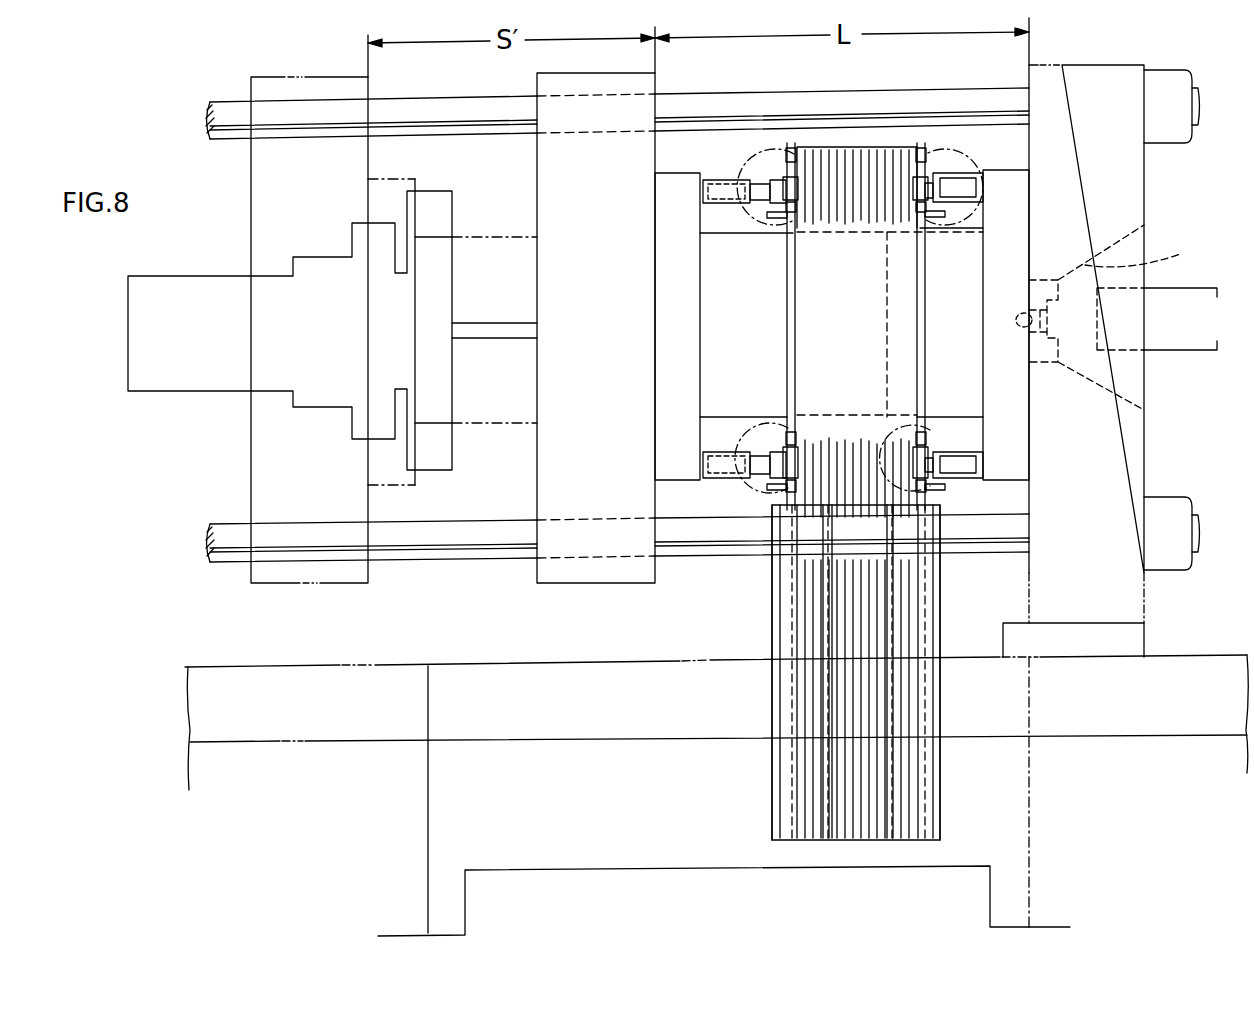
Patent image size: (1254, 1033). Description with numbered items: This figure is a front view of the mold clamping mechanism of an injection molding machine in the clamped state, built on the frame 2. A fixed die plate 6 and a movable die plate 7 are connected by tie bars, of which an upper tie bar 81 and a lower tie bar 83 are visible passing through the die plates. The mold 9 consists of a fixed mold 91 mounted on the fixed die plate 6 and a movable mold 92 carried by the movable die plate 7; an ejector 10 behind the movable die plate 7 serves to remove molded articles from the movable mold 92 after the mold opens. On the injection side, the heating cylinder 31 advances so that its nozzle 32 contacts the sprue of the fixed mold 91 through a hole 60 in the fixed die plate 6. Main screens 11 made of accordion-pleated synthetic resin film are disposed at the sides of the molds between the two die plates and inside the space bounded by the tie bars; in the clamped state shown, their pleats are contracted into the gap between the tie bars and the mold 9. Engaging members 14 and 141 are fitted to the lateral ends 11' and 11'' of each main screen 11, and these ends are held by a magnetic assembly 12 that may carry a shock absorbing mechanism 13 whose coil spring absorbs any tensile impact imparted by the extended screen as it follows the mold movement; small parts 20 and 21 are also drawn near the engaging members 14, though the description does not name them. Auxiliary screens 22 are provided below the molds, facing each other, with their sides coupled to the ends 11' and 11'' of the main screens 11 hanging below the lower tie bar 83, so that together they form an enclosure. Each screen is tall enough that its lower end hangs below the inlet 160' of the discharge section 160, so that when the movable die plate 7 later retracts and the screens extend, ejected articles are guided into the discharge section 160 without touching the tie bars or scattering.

The frame 2 is at (1182, 688).
The fixed die plate 6 is at (1073, 80).
The movable die plate 7 is at (311, 90).
The tie bar 81 is at (218, 104).
The tie bar 83 is at (228, 528).
The mold 9 is at (898, 192).
The fixed mold 91 is at (900, 252).
The movable mold 92 is at (868, 252).
The ejector 10 is at (514, 340).
The main screen 11 is at (861, 141).
The lateral end of screen 11' is at (881, 639).
The lateral end of screen 11'' is at (824, 585).
The magnetic assembly 12 is at (975, 188).
The shock absorbing mechanism 13 is at (717, 192).
The engaging member 14 is at (795, 243).
The engaging member 141 is at (848, 84).
The nut 20 is at (770, 202).
The fitting 21 is at (787, 216).
The auxiliary screen 22 is at (928, 647).
The heating cylinder 31 is at (1183, 294).
The nozzle 32 is at (1024, 312).
The hole of fixed die plate 60 is at (1142, 251).
The discharge section 160 is at (710, 901).
The inlet of discharge section 160' is at (691, 634).